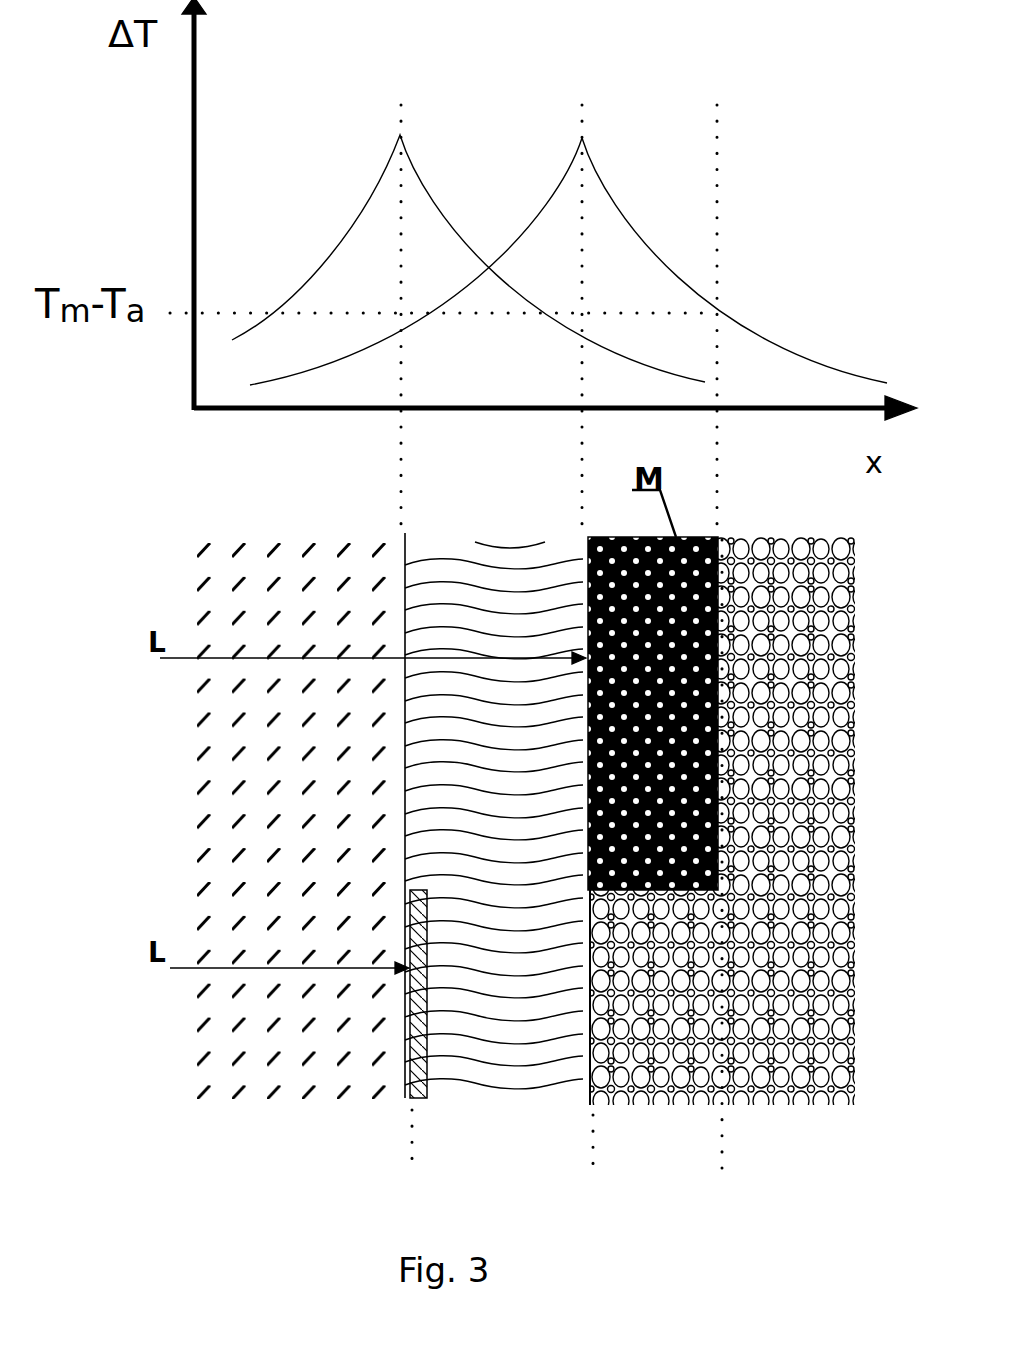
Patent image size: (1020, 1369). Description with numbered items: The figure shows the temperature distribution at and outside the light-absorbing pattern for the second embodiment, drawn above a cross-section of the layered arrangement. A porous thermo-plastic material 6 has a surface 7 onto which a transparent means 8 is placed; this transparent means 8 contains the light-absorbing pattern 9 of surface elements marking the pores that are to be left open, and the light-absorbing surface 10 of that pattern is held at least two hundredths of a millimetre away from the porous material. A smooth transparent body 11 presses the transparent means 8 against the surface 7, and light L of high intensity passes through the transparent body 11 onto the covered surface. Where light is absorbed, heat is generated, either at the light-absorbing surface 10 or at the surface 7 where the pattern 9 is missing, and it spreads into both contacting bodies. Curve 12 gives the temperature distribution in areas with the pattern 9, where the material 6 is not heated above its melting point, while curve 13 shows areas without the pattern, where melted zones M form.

The porous thermo-plastic material 6 is at (814, 821).
The surface of the porous thermo-plastic material 7 is at (615, 1035).
The transparent means 8 is at (507, 509).
The light-absorbing pattern 9 is at (494, 853).
The light-absorbing surface 10 is at (378, 1032).
The smooth transparent body 11 is at (273, 860).
The curve 12 is at (468, 241).
The curve 13 is at (568, 242).